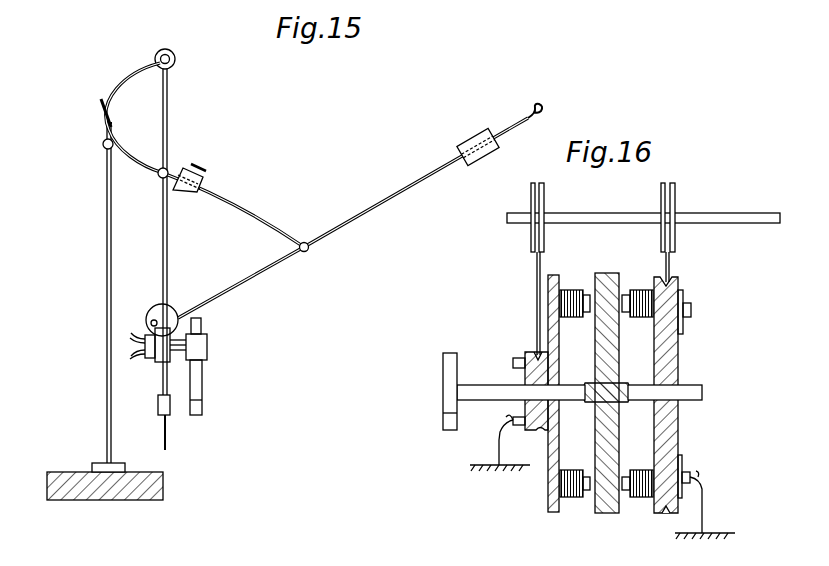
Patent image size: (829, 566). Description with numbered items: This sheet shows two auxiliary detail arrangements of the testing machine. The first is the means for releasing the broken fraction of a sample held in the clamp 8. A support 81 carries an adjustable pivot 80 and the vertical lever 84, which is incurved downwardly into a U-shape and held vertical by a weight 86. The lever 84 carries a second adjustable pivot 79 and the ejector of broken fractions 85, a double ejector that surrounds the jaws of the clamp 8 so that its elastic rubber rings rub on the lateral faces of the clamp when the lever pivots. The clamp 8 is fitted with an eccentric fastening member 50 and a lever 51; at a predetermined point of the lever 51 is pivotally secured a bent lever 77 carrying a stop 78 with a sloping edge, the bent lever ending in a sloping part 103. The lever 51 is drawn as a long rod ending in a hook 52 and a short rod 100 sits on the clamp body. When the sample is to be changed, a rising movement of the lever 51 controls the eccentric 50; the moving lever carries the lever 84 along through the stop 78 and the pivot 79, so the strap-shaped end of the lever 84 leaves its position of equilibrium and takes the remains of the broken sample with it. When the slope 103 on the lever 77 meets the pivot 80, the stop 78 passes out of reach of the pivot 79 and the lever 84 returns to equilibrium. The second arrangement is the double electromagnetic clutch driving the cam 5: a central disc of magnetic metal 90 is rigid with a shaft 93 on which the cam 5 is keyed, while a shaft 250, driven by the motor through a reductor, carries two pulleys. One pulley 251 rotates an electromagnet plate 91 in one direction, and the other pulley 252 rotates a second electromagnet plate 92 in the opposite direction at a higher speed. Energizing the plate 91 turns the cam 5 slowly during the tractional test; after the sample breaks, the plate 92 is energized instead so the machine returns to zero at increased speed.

In FIG. 16, the cam 5 is at (448, 378).
In FIG. 15, the clamp 8 is at (188, 346).
In FIG. 15, the eccentric fastening member 50 is at (155, 307).
In FIG. 15, the lever 51 is at (248, 277).
In FIG. 15, the hook end 52 is at (546, 107).
In FIG. 15, the bent lever 77 is at (304, 242).
In FIG. 15, the stop 78 is at (205, 182).
In FIG. 15, the adjustable pivot 79 is at (161, 177).
In FIG. 15, the adjustable pivot 80 is at (104, 147).
In FIG. 15, the support 81 is at (105, 303).
In FIG. 15, the vertical lever 84 is at (166, 121).
In FIG. 15, the ejector of broken fractions 85 is at (155, 363).
In FIG. 15, the weight 86 is at (167, 417).
In FIG. 15, the rod 100 is at (202, 327).
In FIG. 15, the sloping part 103 is at (100, 103).
In FIG. 16, the central disc of magnetic metal 90 is at (610, 360).
In FIG. 16, the electromagnet plate 91 is at (683, 358).
In FIG. 16, the second electromagnet plate 92 is at (553, 312).
In FIG. 16, the shaft 93 is at (684, 397).
In FIG. 16, the shaft 250 is at (724, 223).
In FIG. 16, the pulley 251 is at (675, 197).
In FIG. 16, the pulley 252 is at (544, 197).